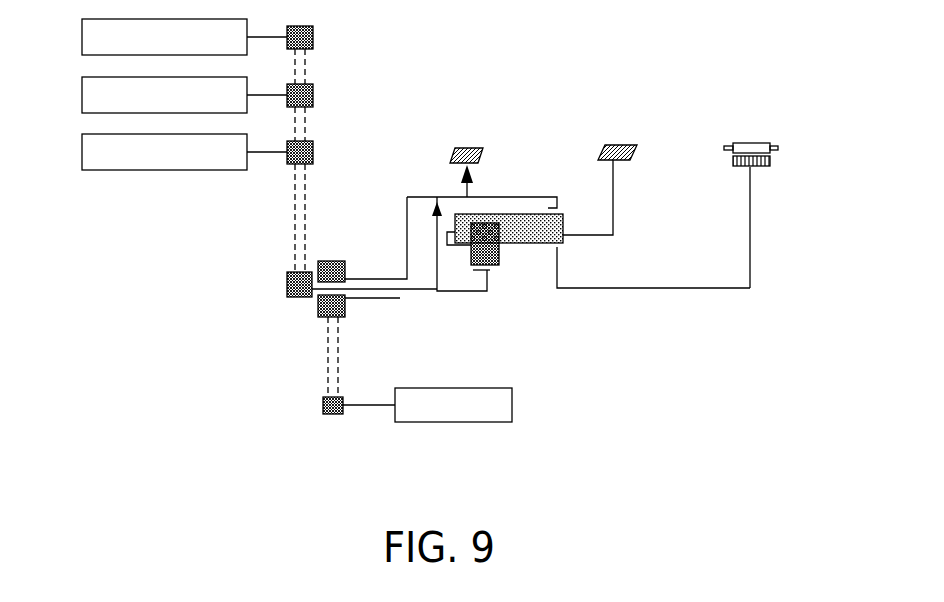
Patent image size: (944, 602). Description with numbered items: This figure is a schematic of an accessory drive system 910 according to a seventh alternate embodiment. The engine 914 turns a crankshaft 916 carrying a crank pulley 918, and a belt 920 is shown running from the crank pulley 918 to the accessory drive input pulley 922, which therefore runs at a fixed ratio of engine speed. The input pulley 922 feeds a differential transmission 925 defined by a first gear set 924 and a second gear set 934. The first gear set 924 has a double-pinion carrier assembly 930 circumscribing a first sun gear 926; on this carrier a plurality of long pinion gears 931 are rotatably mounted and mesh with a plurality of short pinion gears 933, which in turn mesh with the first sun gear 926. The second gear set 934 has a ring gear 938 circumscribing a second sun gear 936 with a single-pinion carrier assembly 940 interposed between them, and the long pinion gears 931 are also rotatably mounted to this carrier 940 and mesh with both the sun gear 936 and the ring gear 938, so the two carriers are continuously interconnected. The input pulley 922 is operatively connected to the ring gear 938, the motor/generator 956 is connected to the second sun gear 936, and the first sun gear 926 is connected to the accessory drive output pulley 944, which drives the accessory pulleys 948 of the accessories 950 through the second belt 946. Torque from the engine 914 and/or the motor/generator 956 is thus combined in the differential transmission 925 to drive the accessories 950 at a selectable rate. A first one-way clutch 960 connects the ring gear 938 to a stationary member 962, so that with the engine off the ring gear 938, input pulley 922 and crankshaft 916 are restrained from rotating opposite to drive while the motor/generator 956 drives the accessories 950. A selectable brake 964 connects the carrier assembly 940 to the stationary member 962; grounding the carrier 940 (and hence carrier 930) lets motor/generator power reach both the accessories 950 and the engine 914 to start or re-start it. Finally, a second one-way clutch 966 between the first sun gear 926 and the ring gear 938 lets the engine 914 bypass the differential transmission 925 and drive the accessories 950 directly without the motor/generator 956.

The accessory drive system 910 is at (762, 40).
The engine 914 is at (484, 422).
The crankshaft 916 is at (378, 406).
The crank pulley 918 is at (323, 405).
The drive shaft 920 is at (312, 346).
The accessory drive input pulley 922 is at (318, 306).
The first gear set 924 is at (510, 288).
The differential transmission 925 is at (755, 370).
The first sun gear 926 is at (497, 270).
The double-pinion carrier assembly 930 is at (447, 233).
The long pinion gears 931 is at (530, 213).
The short pinion gears 933 is at (499, 253).
The second gear set 934 is at (670, 266).
The second sun gear 936 is at (553, 248).
The ring gear 938 is at (557, 209).
The single-pinion carrier assembly 940 is at (600, 238).
The accessory drive output pulley 944 is at (287, 284).
The second belt 946 is at (281, 204).
The accessory pulleys 948 is at (315, 40).
The accessories 950 is at (82, 37).
The motor/generator 956 is at (760, 127).
The first one-way clutch 960 is at (473, 171).
The stationary member 962 is at (470, 136).
The selectable brake 964 is at (632, 161).
The second one-way clutch 966 is at (434, 214).